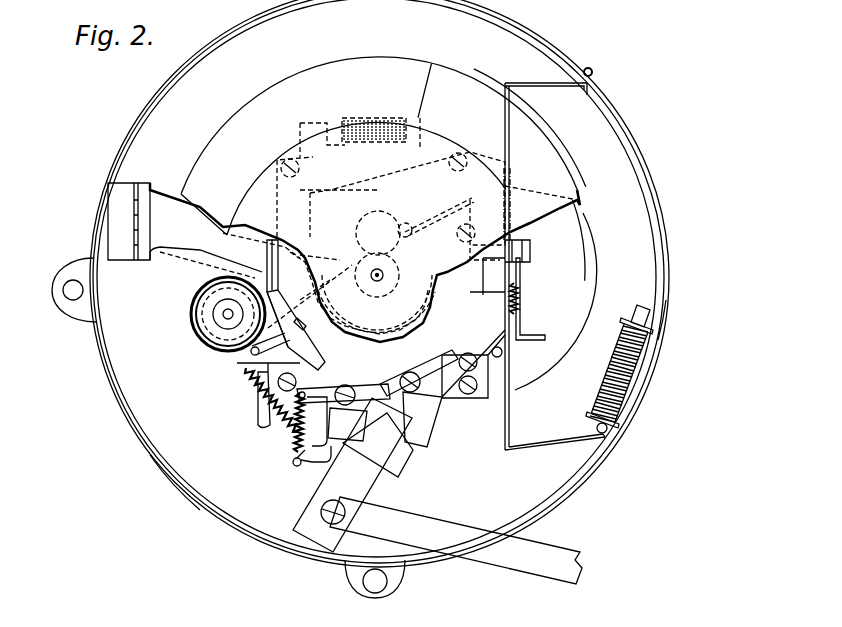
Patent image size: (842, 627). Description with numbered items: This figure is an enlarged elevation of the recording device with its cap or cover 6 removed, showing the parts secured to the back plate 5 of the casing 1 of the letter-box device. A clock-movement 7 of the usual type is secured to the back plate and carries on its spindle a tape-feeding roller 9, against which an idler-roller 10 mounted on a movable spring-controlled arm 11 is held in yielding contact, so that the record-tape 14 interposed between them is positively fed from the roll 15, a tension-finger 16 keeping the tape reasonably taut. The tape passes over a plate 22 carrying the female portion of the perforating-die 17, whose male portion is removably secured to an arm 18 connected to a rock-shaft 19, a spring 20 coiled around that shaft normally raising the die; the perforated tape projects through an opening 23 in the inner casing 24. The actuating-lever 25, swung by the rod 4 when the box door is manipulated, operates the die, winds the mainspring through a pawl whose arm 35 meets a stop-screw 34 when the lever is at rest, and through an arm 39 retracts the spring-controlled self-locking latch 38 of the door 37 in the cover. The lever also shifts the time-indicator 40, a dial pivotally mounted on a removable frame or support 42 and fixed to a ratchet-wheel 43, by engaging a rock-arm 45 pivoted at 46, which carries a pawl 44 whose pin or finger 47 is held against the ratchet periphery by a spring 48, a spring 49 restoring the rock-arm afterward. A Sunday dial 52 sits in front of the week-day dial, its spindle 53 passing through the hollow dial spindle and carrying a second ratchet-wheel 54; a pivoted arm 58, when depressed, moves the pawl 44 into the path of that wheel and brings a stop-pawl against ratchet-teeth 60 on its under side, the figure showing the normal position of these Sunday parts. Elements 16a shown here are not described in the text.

The casing 1 is at (142, 108).
The rod 4 is at (451, 541).
The back plate 5 is at (95, 348).
The cap-piece or cover 6 is at (150, 455).
The clock-movement 7 is at (391, 191).
The tape-feeding roller 9 is at (383, 295).
The idler-roller 10 is at (376, 226).
The spring-controlled arm 11 is at (411, 217).
The record-tape 14 is at (213, 348).
The roll 15 is at (206, 314).
The tension-finger 16 is at (252, 353).
The pivot pin 16a is at (531, 250).
The perforating-die 17 is at (521, 258).
The arm 18 is at (450, 197).
The rock-shaft 19 is at (420, 136).
The spring 20 is at (374, 142).
The plate 22 is at (376, 295).
The opening 23 is at (522, 276).
The inner casing 24 is at (537, 266).
The actuating-lever 25 is at (368, 492).
The stop-screw 34 is at (423, 410).
The arm 35 is at (428, 433).
The door 37 is at (667, 316).
The spring-controlled self-locking latch 38 is at (630, 405).
The arm 39 is at (390, 445).
The indicator 40 is at (380, 58).
The frame or support 42 is at (344, 262).
The ratchet-wheel 43 is at (302, 319).
The pawl 44 is at (334, 389).
The rock-arm 45 is at (347, 424).
The pivot 46 is at (294, 462).
The pin or finger 47 is at (419, 373).
The spring 48 is at (283, 432).
The spring 49 is at (256, 393).
The Sunday dial 52 is at (481, 91).
The spindle 53 is at (373, 279).
The second ratchet-wheel 54 is at (266, 261).
The pivoted arm 58 is at (503, 352).
The ratchet-teeth 60 is at (306, 324).